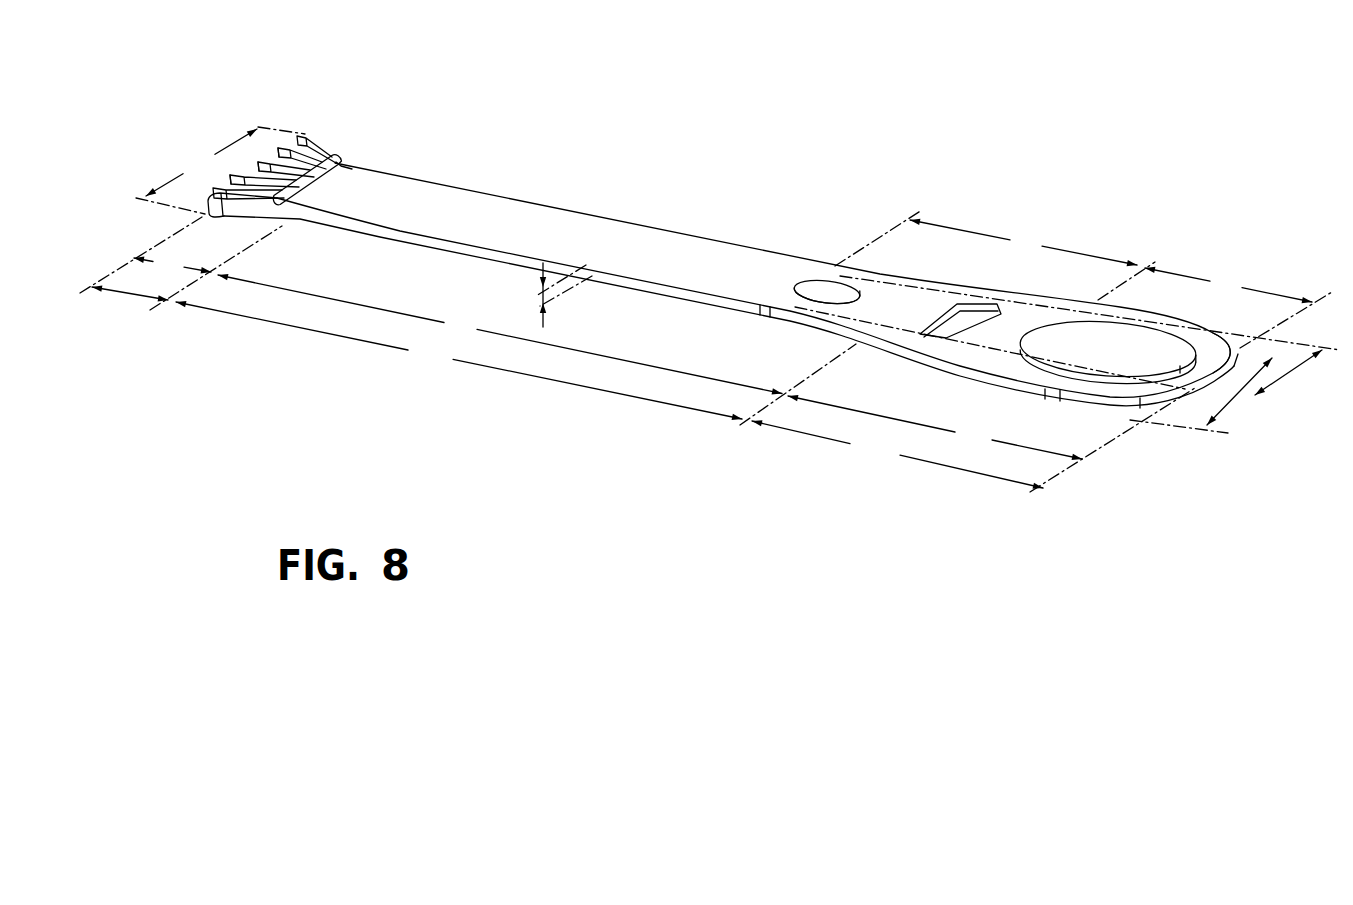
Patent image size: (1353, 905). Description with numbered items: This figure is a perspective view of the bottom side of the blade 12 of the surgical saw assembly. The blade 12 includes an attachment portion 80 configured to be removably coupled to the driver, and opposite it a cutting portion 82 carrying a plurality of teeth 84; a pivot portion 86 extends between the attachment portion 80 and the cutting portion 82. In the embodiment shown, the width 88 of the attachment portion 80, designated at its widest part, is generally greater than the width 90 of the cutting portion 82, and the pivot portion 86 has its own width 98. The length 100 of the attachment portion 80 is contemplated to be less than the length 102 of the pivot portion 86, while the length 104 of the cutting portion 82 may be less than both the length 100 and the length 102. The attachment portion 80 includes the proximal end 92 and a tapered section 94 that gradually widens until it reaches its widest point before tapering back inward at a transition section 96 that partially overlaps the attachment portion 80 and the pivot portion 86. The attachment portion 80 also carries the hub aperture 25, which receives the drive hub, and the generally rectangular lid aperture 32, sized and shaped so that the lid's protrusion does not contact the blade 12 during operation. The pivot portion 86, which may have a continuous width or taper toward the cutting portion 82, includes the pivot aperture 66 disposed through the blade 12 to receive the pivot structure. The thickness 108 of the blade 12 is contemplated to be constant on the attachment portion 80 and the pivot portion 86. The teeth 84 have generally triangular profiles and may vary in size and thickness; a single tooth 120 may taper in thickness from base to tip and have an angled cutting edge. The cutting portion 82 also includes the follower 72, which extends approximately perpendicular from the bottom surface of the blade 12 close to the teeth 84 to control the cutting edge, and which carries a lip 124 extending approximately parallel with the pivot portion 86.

The blade 12 is at (612, 206).
The tooth 120 is at (306, 138).
The teeth 84 is at (311, 140).
The follower 72 is at (336, 163).
The lip 124 is at (325, 186).
The pivot aperture 66 is at (822, 295).
The lid aperture 32 is at (977, 317).
The hub aperture 25 is at (1133, 348).
The width of the cutting portion 90 is at (201, 162).
The cutting portion 82 is at (172, 266).
The pivot portion 86 is at (499, 334).
The attachment portion 80 is at (934, 427).
The length of the cutting portion 104 is at (137, 293).
The length of the pivot portion 102 is at (458, 360).
The length of the attachment portion 100 is at (897, 454).
The thickness 108 is at (543, 320).
The transition section 96 is at (1023, 242).
The tapered section 94 is at (1228, 285).
The width of the attachment portion 88 is at (1240, 391).
The width of the pivot portion 98 is at (1252, 374).
The proximal end 92 is at (1252, 361).